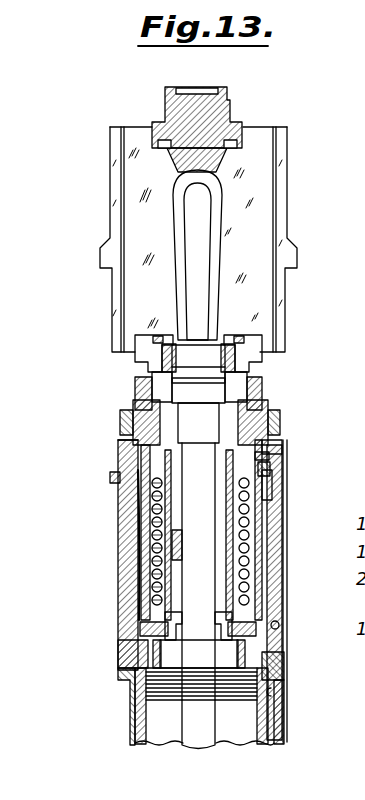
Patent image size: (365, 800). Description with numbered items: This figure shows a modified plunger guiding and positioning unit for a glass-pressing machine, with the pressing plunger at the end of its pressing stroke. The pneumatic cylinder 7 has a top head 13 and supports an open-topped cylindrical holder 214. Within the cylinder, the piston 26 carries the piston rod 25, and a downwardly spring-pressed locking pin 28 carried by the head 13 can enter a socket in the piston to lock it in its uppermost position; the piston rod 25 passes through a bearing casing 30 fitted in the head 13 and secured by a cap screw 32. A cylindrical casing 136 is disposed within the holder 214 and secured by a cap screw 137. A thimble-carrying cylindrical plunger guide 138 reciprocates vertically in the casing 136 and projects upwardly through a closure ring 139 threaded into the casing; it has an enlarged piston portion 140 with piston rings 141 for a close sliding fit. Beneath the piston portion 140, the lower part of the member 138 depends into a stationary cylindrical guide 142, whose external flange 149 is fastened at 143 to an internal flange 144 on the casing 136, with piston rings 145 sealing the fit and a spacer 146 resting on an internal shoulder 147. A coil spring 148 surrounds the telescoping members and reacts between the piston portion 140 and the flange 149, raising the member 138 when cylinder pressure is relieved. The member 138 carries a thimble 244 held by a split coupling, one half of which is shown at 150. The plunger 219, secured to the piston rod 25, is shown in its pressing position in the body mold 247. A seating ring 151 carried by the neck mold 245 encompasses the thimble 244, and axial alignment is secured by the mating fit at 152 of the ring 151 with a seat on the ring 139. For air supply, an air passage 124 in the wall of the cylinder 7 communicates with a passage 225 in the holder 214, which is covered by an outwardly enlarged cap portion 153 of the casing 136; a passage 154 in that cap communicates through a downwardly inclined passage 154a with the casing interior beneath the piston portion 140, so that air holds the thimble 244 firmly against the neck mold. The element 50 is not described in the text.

The cap 50 is at (228, 124).
The body mold 247 is at (248, 186).
The plunger 219 is at (198, 238).
The neck mold 245 is at (242, 340).
The thimble 244 is at (236, 355).
The split coupling half 150 is at (255, 366).
The seating ring 151 is at (252, 390).
The cylindrical plunger guide 138 is at (264, 416).
The cap portion 153 is at (260, 438).
The piston portion 140 is at (283, 456).
The passage 154 is at (283, 468).
The piston rings 141 is at (270, 478).
The downwardly inclined passage 154a is at (262, 494).
The spacer 146 is at (252, 530).
The piston rod 25 is at (283, 558).
The stationary cylindrical guide 142 is at (262, 582).
The fastening 143 is at (117, 617).
The passage 225 is at (280, 633).
The top head 13 is at (277, 660).
The air passage 124 is at (274, 693).
The pneumatic cylinder 7 is at (132, 725).
The mating fit 152 is at (140, 402).
The closure ring 139 is at (133, 418).
The cap screw 137 is at (116, 455).
The cylindrical casing 136 is at (116, 503).
The coil spring 148 is at (117, 520).
The cylindrical holder 214 is at (117, 543).
The piston rings 145 is at (117, 572).
The bearing casing 30 is at (117, 644).
The cap screw 32 is at (118, 677).
The piston 26 is at (168, 700).
The locking pin 28 is at (243, 700).
The internal shoulder 147 is at (172, 552).
The external flange 149 is at (162, 638).
The internal flange 144 is at (199, 654).